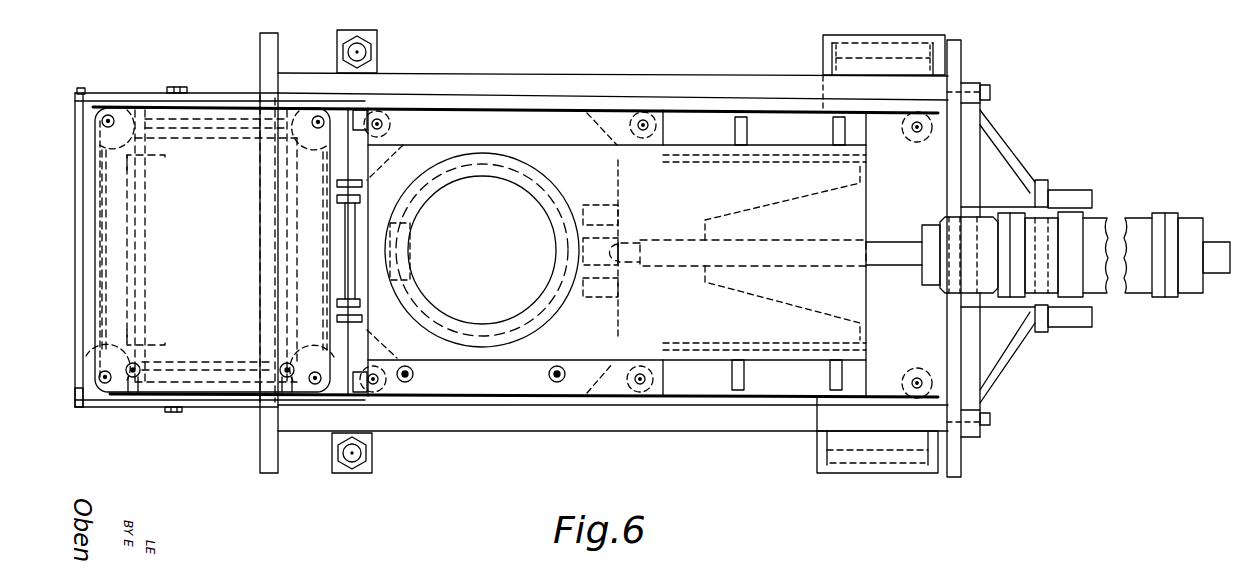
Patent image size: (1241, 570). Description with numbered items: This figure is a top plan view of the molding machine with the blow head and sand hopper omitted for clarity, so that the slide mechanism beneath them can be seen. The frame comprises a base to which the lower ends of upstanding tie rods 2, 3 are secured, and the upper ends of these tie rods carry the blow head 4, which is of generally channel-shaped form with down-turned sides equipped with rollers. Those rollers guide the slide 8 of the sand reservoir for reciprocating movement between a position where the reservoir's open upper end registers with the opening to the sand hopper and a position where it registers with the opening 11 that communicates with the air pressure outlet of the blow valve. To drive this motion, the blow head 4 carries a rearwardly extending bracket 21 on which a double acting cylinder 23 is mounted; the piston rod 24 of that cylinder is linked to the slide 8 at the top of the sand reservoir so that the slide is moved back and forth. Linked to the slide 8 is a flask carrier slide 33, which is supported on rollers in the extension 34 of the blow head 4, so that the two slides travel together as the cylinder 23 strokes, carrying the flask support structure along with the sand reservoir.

The tie rod 2 is at (364, 52).
The tie rod 3 is at (889, 36).
The blow head 4 is at (623, 432).
The slide 8 is at (606, 187).
The opening 11 is at (458, 318).
The bracket 21 is at (1003, 367).
The double acting cylinder 23 is at (1138, 296).
The piston rod 24 is at (677, 265).
The flask carrier slide 33 is at (220, 400).
The extension 34 is at (132, 398).